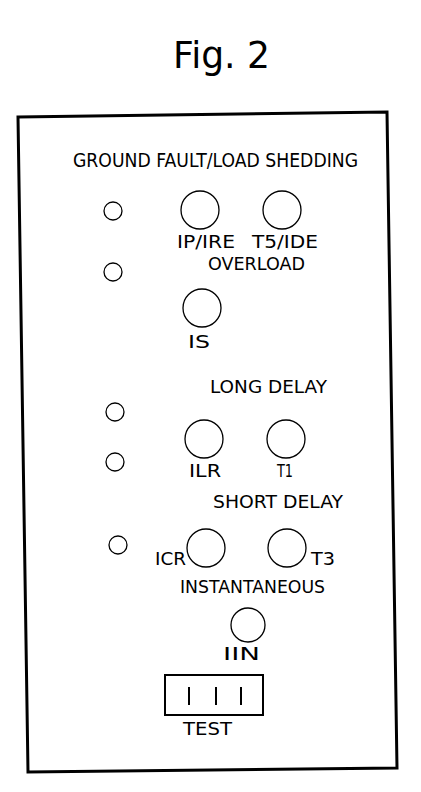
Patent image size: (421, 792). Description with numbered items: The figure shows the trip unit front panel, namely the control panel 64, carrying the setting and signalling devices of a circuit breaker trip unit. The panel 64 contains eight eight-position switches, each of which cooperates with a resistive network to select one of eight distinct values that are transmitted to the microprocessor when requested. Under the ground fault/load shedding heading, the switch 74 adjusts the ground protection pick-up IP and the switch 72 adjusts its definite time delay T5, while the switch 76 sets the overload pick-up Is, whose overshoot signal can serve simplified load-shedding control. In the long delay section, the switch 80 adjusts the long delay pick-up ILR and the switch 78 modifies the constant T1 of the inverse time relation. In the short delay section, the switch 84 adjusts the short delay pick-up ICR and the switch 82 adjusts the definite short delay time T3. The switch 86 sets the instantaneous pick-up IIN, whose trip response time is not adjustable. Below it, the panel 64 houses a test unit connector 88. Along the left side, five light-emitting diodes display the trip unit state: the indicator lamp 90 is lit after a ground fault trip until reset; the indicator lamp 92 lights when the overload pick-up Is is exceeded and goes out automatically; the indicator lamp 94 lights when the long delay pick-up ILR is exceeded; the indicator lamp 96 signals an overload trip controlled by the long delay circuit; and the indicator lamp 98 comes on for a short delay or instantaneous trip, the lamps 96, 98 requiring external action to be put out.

The control panel 64 is at (215, 146).
The switch 72 is at (296, 197).
The switch 74 is at (214, 197).
The switch 76 is at (216, 295).
The switch 78 is at (299, 425).
The switch 80 is at (217, 425).
The switch 82 is at (300, 534).
The switch 84 is at (226, 524).
The switch 86 is at (260, 613).
The test unit connector 88 is at (264, 688).
The indicator lamp 90 is at (120, 205).
The indicator lamp 92 is at (120, 266).
The indicator lamp 94 is at (121, 405).
The indicator lamp 96 is at (122, 456).
The indicator lamp 98 is at (123, 538).